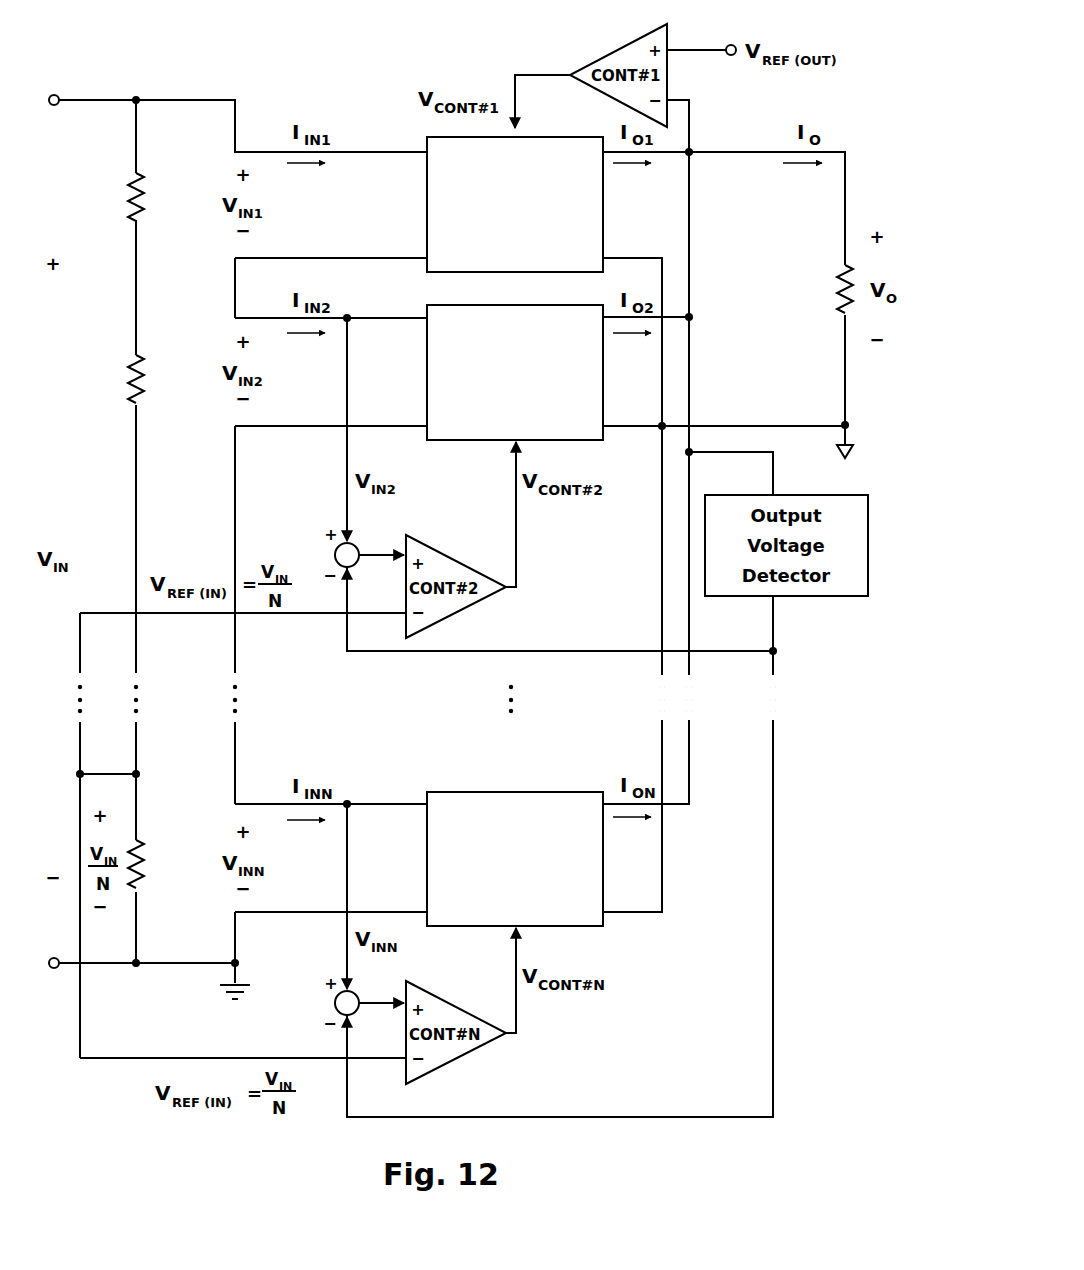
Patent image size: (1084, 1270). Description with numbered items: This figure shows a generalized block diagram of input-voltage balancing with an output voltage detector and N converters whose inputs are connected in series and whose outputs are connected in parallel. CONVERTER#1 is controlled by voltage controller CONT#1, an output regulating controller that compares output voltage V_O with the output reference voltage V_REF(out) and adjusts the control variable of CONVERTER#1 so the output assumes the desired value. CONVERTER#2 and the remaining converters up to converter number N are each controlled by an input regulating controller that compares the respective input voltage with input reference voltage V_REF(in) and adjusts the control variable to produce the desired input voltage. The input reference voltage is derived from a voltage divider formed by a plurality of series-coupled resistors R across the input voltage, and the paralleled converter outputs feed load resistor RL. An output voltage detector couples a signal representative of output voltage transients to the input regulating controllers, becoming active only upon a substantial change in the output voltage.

The converter # 1 is at (515, 204).
The converter # 2 is at (515, 372).
The converter # N is at (515, 859).
The input divider resistor R is at (147, 530).
The load resistor RL is at (825, 289).